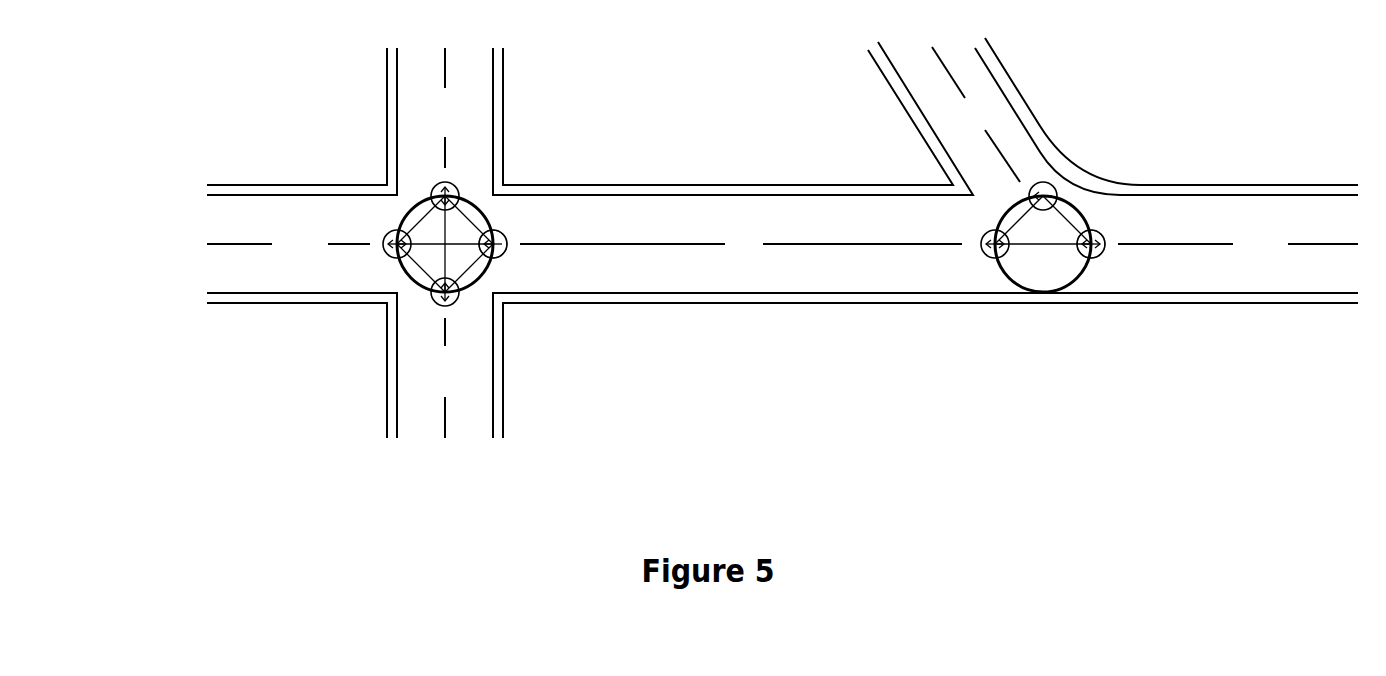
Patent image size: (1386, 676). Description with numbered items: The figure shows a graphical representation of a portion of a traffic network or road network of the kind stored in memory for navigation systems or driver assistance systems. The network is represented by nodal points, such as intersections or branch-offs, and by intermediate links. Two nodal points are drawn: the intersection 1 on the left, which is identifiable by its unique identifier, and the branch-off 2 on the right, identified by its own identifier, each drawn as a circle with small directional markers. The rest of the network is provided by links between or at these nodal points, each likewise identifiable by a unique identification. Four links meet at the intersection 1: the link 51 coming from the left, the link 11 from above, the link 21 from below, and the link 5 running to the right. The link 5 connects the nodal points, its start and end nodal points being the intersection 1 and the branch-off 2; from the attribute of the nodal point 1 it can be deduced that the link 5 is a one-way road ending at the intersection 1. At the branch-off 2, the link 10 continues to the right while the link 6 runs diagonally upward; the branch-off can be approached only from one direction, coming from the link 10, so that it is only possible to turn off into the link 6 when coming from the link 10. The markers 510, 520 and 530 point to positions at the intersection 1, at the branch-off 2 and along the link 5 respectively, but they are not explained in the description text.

The intersection 1 is at (445, 244).
The branch-off 2 is at (1043, 237).
The link 5 is at (741, 245).
The link 6 is at (925, 116).
The link 10 is at (1238, 245).
The link 11 is at (444, 108).
The link 21 is at (444, 378).
The link 51 is at (288, 245).
The exit point of first intersection 510 is at (494, 212).
The exit point of second intersection 520 is at (1091, 214).
The road edge of segment 530 is at (727, 217).